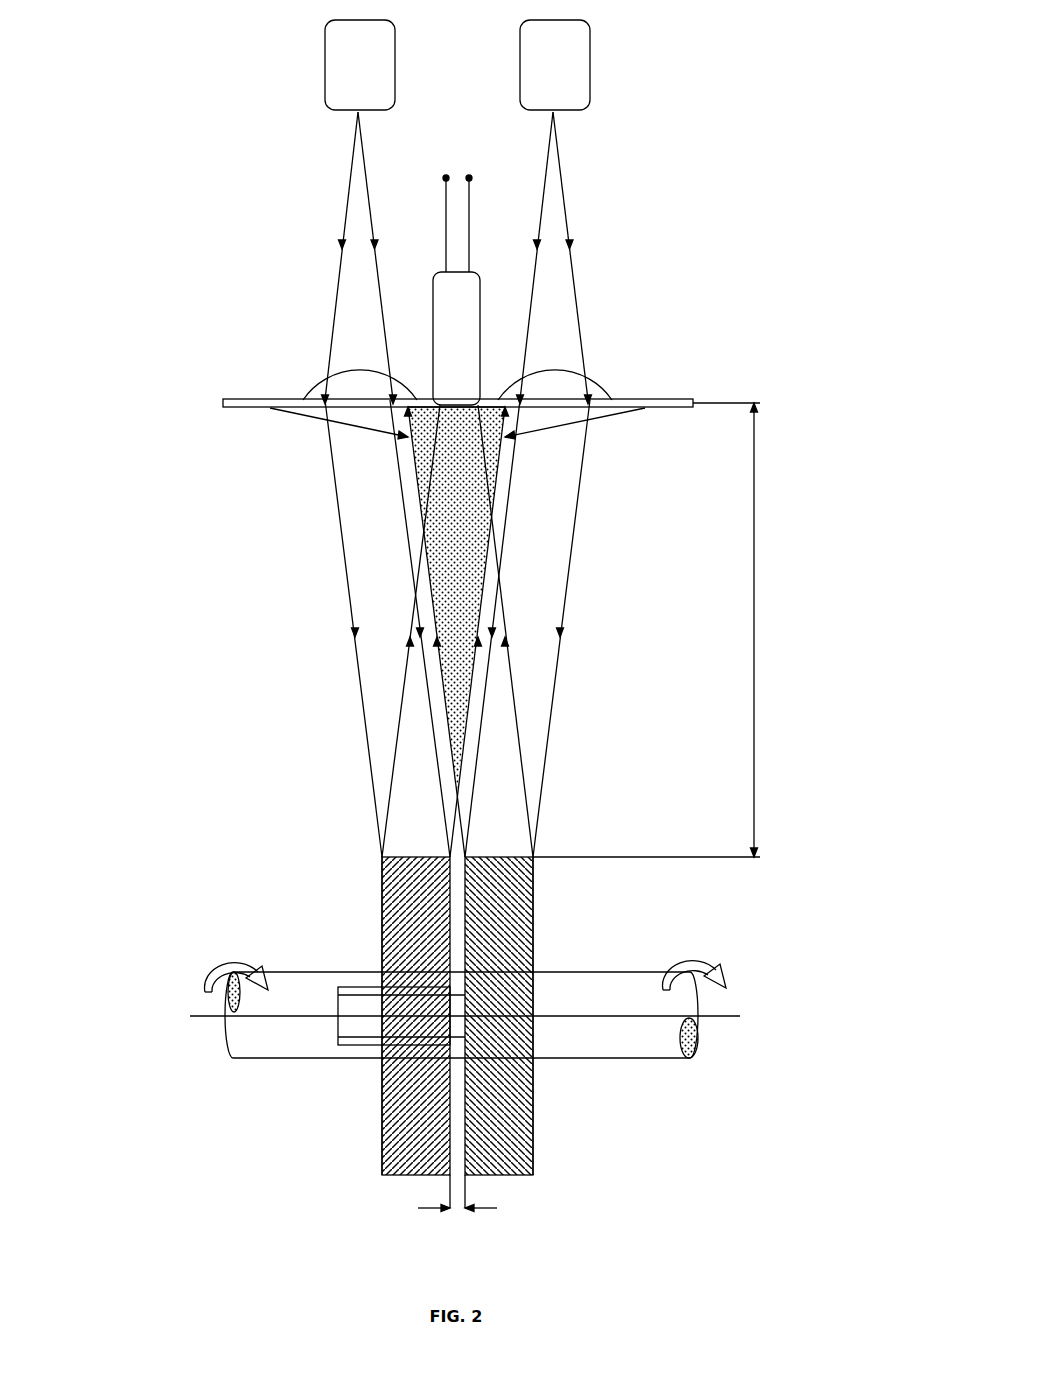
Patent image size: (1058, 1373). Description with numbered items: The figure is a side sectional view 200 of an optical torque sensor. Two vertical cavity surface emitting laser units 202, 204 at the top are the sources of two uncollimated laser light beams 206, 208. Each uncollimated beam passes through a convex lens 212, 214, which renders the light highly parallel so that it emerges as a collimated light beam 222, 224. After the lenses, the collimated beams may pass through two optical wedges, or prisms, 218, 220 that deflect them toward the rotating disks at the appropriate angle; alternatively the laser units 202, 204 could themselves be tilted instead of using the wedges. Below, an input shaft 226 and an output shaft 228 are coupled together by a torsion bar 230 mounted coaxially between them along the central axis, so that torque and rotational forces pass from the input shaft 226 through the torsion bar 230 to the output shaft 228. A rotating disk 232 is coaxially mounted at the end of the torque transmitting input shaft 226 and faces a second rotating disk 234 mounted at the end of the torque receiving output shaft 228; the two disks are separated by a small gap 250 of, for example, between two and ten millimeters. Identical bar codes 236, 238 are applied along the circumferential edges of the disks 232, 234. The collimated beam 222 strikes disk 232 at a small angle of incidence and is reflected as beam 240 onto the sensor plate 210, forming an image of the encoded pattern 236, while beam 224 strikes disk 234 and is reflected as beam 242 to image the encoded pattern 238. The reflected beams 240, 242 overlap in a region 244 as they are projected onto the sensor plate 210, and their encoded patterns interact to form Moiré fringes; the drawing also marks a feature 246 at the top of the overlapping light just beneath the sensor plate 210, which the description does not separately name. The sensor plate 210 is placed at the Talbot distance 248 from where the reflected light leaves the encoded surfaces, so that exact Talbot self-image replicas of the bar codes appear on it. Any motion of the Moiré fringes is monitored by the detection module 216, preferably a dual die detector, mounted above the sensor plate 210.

The side sectional view 200 is at (125, 569).
The vertical cavity surface emitting laser unit 202 is at (343, 62).
The vertical cavity surface emitting laser unit 204 is at (567, 62).
The uncollimated laser light beam 206 is at (333, 320).
The uncollimated laser light beam 208 is at (583, 320).
The sensor plate 210 is at (223, 400).
The convex lens 212 is at (316, 385).
The convex lens 214 is at (598, 385).
The detection module 216 is at (450, 327).
The optical wedge 218 is at (307, 428).
The optical wedge 220 is at (608, 428).
The collimated light beam 222 is at (343, 550).
The collimated light beam 224 is at (571, 552).
The input shaft 226 is at (258, 1053).
The output shaft 228 is at (663, 1053).
The torsion bar 230 is at (358, 1022).
The rotating disk 232 is at (382, 1158).
The rotating disk 234 is at (533, 1158).
The bar code 236 is at (403, 920).
The bar code 238 is at (510, 920).
The reflected beam 240 is at (400, 683).
The reflected beam 242 is at (517, 680).
The overlap of reflected beams 244 is at (452, 633).
The detector aperture 246 is at (463, 408).
The Talbot distance 248 is at (656, 630).
The gap 250 is at (458, 1210).